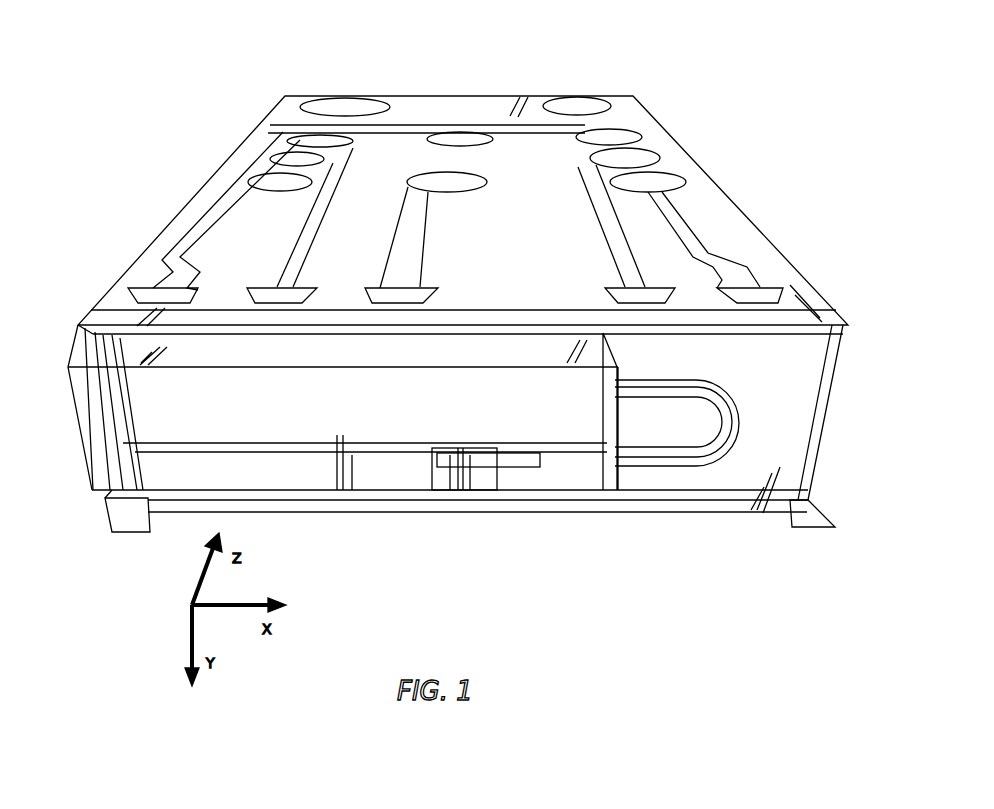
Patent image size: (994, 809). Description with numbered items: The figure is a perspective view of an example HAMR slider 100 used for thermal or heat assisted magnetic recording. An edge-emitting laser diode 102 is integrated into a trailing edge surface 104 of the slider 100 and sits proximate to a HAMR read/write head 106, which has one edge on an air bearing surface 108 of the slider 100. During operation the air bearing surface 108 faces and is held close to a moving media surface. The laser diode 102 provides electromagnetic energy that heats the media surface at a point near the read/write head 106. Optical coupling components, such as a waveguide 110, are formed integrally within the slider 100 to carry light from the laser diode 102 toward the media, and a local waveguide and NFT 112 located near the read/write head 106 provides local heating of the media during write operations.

The HAMR slider 100 is at (430, 315).
The edge-emitting laser diode 102 is at (88, 470).
The trailing edge surface 104 is at (133, 537).
The HAMR read/write head 106 is at (472, 495).
The air bearing surface 108 is at (825, 530).
The waveguide 110 is at (680, 462).
The local waveguide and NFT 112 is at (457, 498).